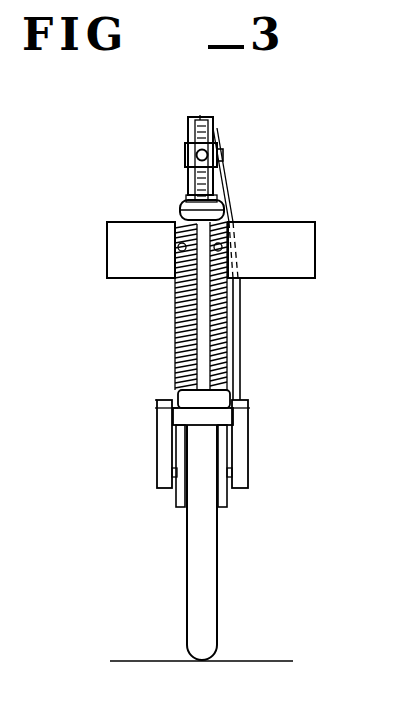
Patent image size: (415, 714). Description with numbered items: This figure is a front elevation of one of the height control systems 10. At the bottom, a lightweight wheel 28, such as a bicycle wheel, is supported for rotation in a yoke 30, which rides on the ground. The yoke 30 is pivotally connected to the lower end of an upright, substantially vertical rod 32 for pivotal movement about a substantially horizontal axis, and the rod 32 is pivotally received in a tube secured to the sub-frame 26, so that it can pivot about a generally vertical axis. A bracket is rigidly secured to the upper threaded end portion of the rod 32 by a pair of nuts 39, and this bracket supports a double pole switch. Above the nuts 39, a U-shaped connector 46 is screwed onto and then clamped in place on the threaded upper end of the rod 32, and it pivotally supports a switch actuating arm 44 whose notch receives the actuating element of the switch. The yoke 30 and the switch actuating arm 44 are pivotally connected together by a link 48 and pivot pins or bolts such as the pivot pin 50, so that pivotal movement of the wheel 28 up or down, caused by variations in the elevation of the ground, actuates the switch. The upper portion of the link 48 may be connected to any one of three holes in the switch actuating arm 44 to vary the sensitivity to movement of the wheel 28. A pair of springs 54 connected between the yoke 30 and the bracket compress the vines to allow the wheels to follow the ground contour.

The height control system 10 is at (252, 115).
The switch actuating arm 44 is at (200, 116).
The vertical rod 32 is at (188, 130).
The U-shaped connector 46 is at (185, 158).
The pivot pin 50 is at (223, 155).
The nuts 39 is at (214, 203).
The sub-frame 26 is at (107, 238).
The link 48 is at (238, 348).
The springs 54 is at (200, 331).
The yoke 30 is at (248, 478).
The wheel 28 is at (187, 605).